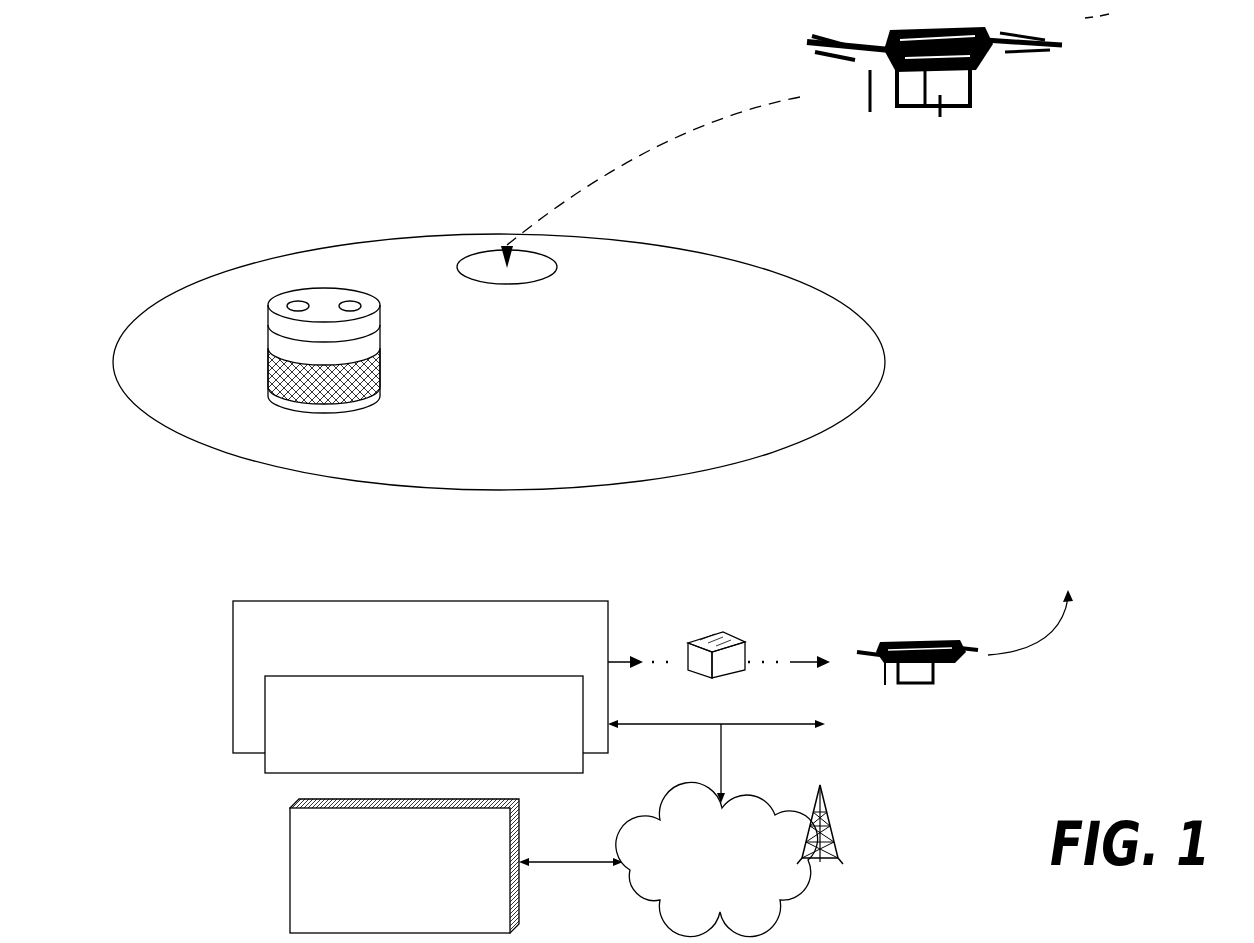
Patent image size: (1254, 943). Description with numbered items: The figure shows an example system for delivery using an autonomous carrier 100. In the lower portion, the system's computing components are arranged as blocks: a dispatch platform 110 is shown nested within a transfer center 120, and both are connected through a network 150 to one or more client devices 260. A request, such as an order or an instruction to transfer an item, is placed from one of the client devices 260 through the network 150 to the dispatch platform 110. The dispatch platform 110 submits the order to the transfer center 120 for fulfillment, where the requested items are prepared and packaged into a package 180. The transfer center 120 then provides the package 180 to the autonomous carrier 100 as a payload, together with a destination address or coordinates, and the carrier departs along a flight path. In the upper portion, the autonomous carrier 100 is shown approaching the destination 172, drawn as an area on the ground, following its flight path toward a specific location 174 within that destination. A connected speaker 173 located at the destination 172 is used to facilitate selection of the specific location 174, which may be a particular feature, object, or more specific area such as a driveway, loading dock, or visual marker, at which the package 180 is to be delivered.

The autonomous carrier 100 is at (990, 105).
The dispatch platform 110 is at (424, 724).
The transfer center 120 is at (420, 677).
The network 150 is at (729, 859).
The destination 172 is at (150, 418).
The connected speaker 173 is at (268, 390).
The specific location 174 is at (470, 277).
The package 180 is at (706, 677).
The client devices 260 is at (404, 866).